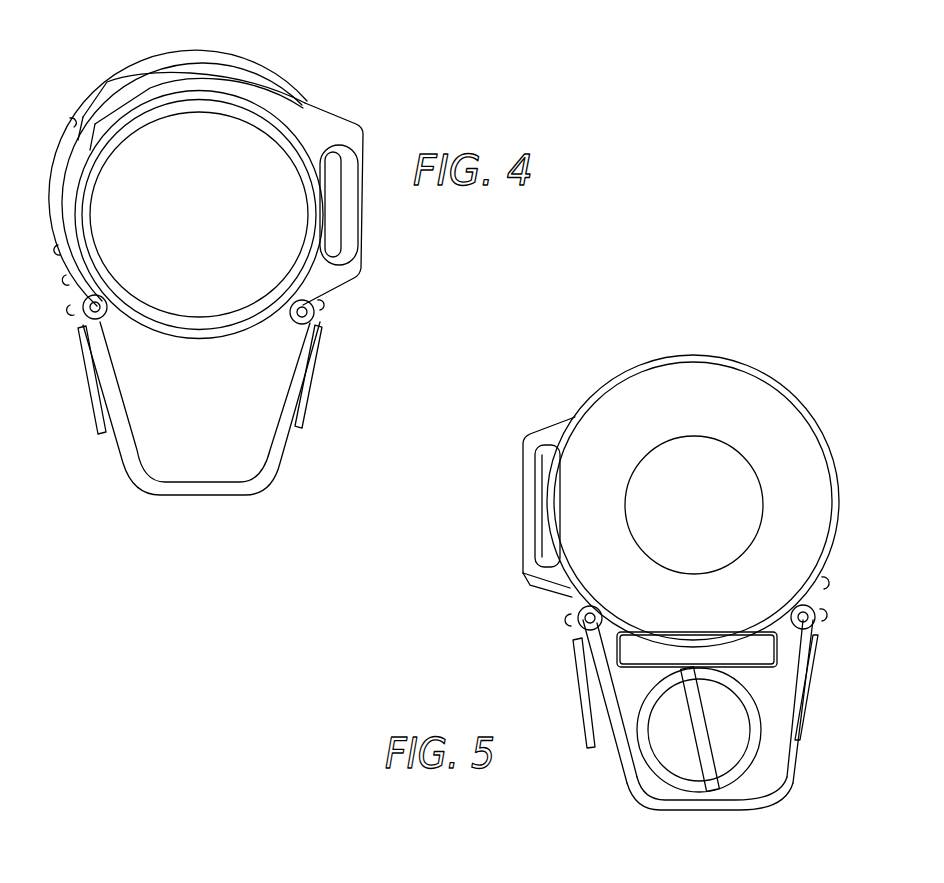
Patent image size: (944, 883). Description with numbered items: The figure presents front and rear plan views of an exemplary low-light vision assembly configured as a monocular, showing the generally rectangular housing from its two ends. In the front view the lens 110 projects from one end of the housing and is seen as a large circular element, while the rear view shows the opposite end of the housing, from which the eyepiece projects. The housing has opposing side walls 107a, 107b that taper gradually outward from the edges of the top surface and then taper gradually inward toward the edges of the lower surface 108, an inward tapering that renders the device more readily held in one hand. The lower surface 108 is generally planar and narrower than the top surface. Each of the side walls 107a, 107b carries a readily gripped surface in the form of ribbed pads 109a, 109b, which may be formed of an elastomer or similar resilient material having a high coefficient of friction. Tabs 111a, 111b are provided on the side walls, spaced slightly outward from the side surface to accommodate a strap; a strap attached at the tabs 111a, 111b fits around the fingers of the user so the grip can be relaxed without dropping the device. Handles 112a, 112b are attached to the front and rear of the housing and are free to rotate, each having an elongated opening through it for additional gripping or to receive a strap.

In FIG. 5, the side wall 107a is at (815, 677).
In FIG. 5, the side wall 107b is at (583, 730).
In FIG. 5, the lower surface 108 is at (700, 812).
In FIG. 5, the ribbed pad 109a is at (830, 583).
In FIG. 5, the ribbed pad 109b is at (570, 620).
In FIG. 4, the lens 110 is at (225, 98).
In FIG. 4, the tab 111a is at (80, 350).
In FIG. 5, the tab 111a is at (818, 643).
In FIG. 4, the tab 111b is at (322, 340).
In FIG. 5, the tab 111b is at (578, 675).
In FIG. 4, the handle 112a is at (337, 277).
In FIG. 5, the handle 112a is at (540, 598).
In FIG. 4, the handle 112b is at (330, 112).
In FIG. 5, the handle 112b is at (545, 422).